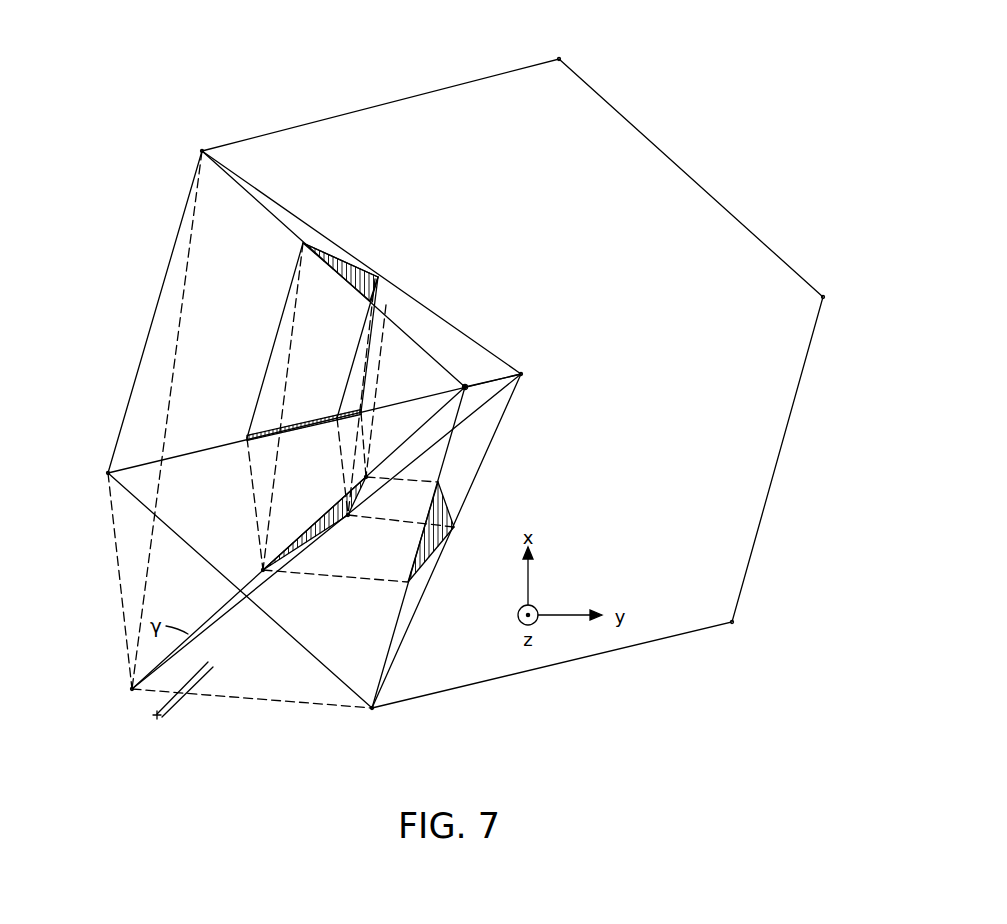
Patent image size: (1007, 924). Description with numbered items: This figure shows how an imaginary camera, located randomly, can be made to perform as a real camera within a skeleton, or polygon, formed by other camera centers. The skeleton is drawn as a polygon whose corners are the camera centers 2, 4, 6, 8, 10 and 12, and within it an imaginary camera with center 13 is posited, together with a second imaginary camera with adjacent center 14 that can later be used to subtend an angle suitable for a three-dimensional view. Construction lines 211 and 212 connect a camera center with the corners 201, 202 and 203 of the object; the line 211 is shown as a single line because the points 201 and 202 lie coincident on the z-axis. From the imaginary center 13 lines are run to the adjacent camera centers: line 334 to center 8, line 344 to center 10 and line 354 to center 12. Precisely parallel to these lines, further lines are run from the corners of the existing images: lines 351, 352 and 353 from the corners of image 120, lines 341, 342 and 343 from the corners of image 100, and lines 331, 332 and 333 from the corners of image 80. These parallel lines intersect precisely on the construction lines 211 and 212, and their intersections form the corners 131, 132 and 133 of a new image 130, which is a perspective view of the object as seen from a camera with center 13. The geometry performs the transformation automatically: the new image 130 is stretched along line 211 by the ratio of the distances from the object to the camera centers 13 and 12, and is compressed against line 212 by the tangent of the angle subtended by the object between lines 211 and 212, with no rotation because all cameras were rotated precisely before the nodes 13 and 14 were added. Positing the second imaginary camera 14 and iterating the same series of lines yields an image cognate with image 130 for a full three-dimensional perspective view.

The camera center 2 is at (559, 59).
The camera center 4 is at (823, 297).
The camera center 6 is at (732, 622).
The camera center 8 is at (372, 708).
The camera center 10 is at (108, 473).
The camera center 12 is at (202, 151).
The imaginary camera center 13 is at (132, 689).
The imaginary camera center 14 is at (155, 715).
The image 80 is at (443, 540).
The image 100 is at (294, 437).
The image 120 is at (343, 262).
The new image 130 is at (312, 537).
The corner of new image 131 is at (265, 574).
The corner of new image 132 is at (367, 480).
The corner of new image 133 is at (350, 518).
The corner 201 is at (470, 390).
The corner 202 is at (470, 390).
The corner 203 is at (521, 374).
The construction line 211 is at (217, 618).
The construction line 212 is at (233, 608).
The line 331 is at (372, 583).
The line 332 is at (387, 481).
The line 333 is at (410, 521).
The line 334 is at (273, 700).
The line 341 is at (255, 520).
The line 342 is at (365, 434).
The line 343 is at (341, 477).
The line 344 is at (114, 553).
The line 351 is at (292, 317).
The line 352 is at (383, 360).
The line 353 is at (368, 352).
The line 354 is at (177, 347).